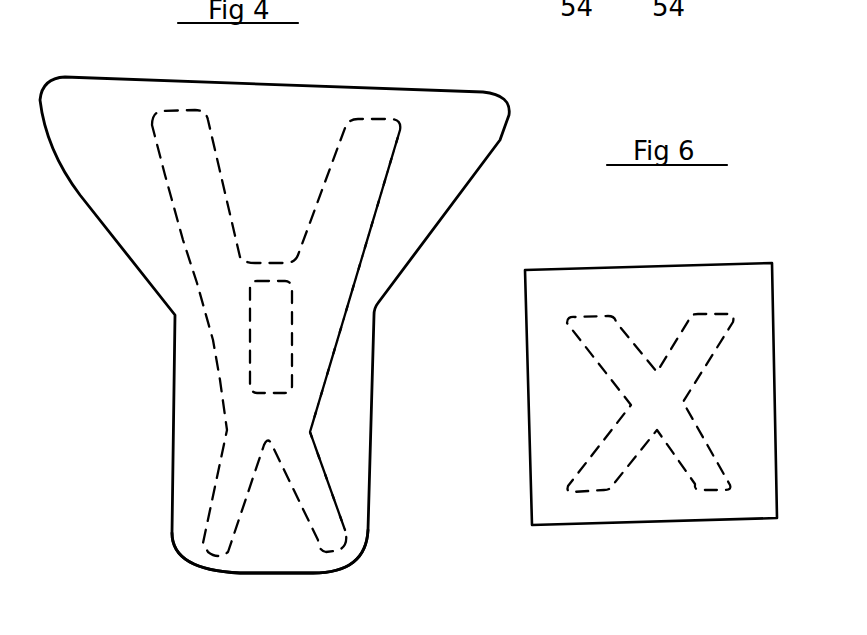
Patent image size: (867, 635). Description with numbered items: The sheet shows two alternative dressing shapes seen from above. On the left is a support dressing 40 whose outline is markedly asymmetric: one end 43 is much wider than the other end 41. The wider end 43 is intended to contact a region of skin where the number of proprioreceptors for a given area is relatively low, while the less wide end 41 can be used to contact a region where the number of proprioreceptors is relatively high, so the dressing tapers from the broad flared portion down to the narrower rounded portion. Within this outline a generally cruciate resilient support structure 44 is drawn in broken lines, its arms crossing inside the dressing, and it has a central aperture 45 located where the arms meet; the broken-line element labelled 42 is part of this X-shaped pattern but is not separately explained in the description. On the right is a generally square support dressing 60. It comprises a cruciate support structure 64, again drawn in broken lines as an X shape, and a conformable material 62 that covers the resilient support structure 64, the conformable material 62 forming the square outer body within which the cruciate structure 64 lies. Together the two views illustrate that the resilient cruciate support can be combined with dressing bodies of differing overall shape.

In FIG. 4, the support dressing 40 is at (150, 398).
In FIG. 4, the less wide end 41 is at (170, 510).
In FIG. 4, the elastic member 42 is at (350, 370).
In FIG. 4, the wider end 43 is at (78, 194).
In FIG. 4, the cruciate resilient support structure 44 is at (204, 200).
In FIG. 4, the central aperture 45 is at (253, 379).
In FIG. 6, the square support dressing 60 is at (496, 462).
In FIG. 6, the conformable material 62 is at (545, 506).
In FIG. 6, the cruciate support structure 64 is at (612, 490).